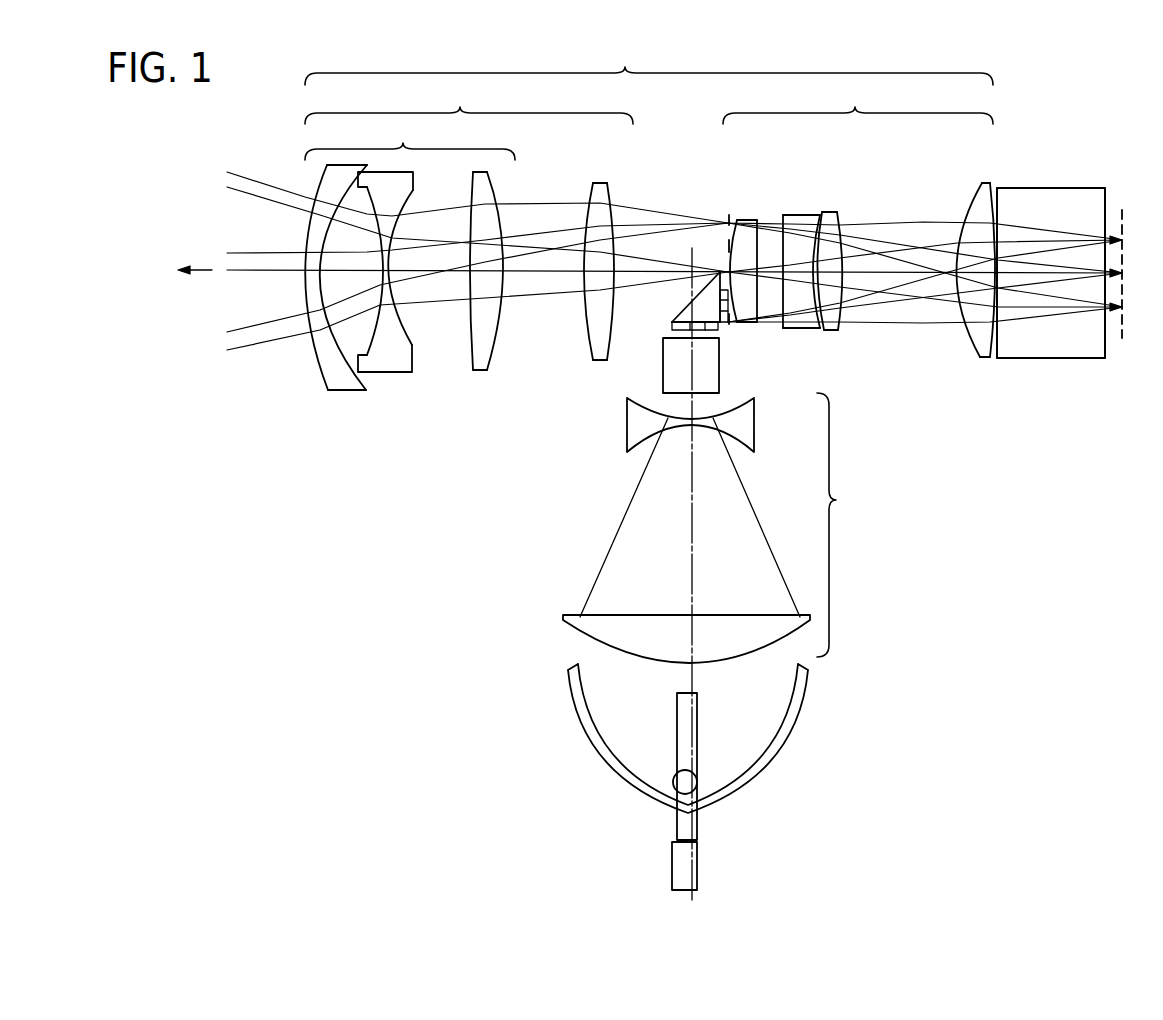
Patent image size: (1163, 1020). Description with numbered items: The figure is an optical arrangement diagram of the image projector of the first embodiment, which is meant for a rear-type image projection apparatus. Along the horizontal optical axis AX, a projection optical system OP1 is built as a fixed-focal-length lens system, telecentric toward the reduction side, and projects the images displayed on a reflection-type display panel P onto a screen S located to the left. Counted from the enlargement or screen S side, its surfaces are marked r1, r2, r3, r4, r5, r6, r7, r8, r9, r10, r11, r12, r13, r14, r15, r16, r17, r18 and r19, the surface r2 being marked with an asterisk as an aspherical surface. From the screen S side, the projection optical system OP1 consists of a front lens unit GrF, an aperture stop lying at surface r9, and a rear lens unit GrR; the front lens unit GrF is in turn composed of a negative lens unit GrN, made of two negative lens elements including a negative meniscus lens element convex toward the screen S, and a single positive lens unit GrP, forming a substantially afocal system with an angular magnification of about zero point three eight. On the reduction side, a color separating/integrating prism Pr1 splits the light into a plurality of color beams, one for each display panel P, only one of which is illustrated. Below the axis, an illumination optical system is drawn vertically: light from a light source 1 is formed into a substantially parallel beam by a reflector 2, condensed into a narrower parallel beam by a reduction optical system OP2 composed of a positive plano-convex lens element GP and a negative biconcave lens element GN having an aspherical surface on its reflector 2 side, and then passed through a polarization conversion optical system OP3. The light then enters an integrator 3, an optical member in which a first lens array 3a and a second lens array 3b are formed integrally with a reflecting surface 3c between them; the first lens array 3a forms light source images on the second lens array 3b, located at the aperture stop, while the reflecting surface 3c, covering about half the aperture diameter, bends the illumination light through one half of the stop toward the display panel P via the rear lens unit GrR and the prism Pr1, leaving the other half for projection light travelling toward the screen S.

The light source 1 is at (697, 783).
The reflector 2 is at (785, 725).
The integrator 3 is at (687, 325).
The first lens array 3a is at (672, 324).
The second lens array 3b is at (721, 325).
The reflecting surface 3c is at (684, 314).
The projection optical system OP1 is at (649, 61).
The reduction optical system OP2 is at (729, 575).
The polarization conversion optical system OP3 is at (720, 380).
The front lens unit GrF is at (469, 101).
The rear lens unit GrR is at (858, 102).
The negative lens unit GrN is at (410, 138).
The positive lens unit GrP is at (572, 276).
The negative biconcave lens element GN is at (755, 433).
The positive plano-convex lens element GP is at (798, 620).
The color separating/integrating prism Pr1 is at (1047, 188).
The reflection-type display panel P is at (1148, 287).
The screen S is at (168, 284).
The optical axis AX is at (258, 273).
The first surface r1 is at (322, 384).
The second surface r2 is at (349, 350).
The third surface r3 is at (368, 342).
The fourth surface r4 is at (413, 343).
The fifth surface r5 is at (472, 362).
The sixth surface r6 is at (489, 362).
The seventh surface r7 is at (586, 338).
The eighth surface r8 is at (614, 350).
The ninth surface r9 is at (728, 218).
The tenth surface r10 is at (734, 220).
The eleventh surface r11 is at (758, 220).
The twelfth surface r12 is at (786, 214).
The thirteenth surface r13 is at (819, 212).
The fourteenth surface r14 is at (827, 332).
The fifteenth surface r15 is at (841, 329).
The sixteenth surface r16 is at (966, 338).
The seventeenth surface r17 is at (982, 359).
The eighteenth surface r18 is at (998, 350).
The nineteenth surface r19 is at (1106, 350).